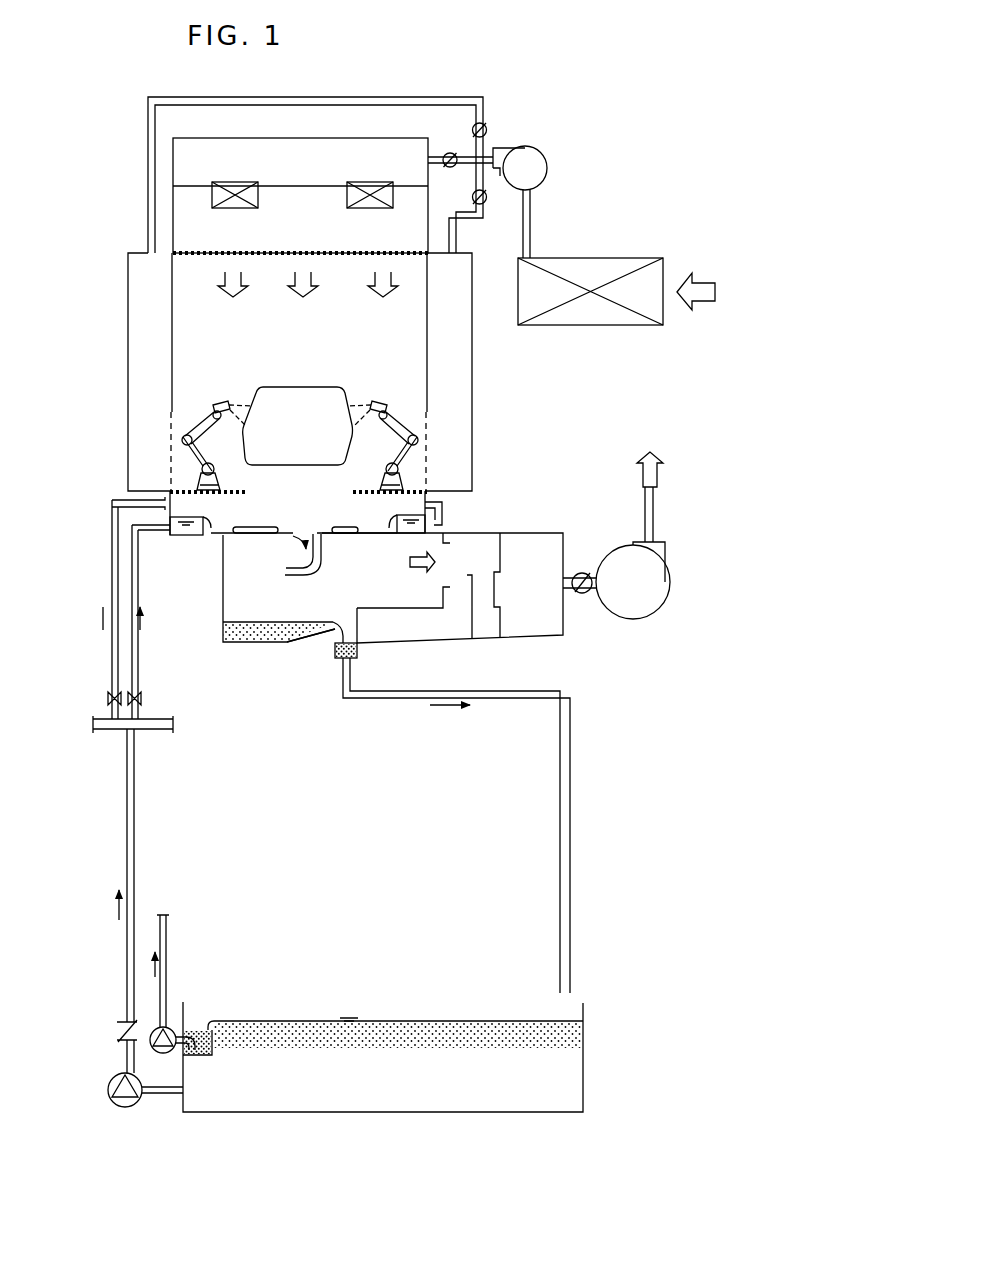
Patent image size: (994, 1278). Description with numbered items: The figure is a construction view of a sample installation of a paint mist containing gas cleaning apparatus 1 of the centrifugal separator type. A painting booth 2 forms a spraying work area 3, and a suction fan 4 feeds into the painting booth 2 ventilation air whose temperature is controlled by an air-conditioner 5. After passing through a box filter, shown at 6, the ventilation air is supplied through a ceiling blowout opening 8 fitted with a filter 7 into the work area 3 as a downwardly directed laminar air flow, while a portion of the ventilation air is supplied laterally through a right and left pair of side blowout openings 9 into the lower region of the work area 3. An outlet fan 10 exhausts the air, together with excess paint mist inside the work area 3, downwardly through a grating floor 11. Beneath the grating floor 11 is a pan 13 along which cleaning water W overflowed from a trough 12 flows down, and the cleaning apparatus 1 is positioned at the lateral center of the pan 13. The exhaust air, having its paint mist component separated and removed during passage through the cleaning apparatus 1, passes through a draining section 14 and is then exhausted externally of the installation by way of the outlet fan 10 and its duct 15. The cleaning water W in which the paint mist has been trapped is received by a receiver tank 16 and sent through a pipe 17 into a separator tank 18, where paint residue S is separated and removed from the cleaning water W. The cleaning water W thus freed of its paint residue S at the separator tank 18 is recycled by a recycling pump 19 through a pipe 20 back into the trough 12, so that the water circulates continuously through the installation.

The paint mist containing gas cleaning apparatus 1 is at (322, 575).
The painting booth 2 is at (428, 358).
The spraying work area 3 is at (298, 391).
The suction fan 4 is at (538, 151).
The air-conditioner 5 is at (600, 257).
The filters 6 is at (347, 208).
The filter 7 is at (208, 252).
The ceiling blowout opening 8 is at (337, 262).
The side blowout openings 9 is at (179, 428).
The outlet fan 10 is at (666, 588).
The grating floor 11 is at (222, 494).
The trough 12 is at (184, 536).
The pan 13 is at (257, 535).
The draining section 14 is at (221, 609).
The exhaust duct 15 is at (645, 513).
The receiver tank 16 is at (288, 643).
The pipe 17 is at (571, 750).
The separator tank 18 is at (584, 1083).
The recycling pump 19 is at (108, 1090).
The pipe 20 is at (135, 790).
The cleaning water W is at (253, 629).
The paint residue S is at (248, 1030).